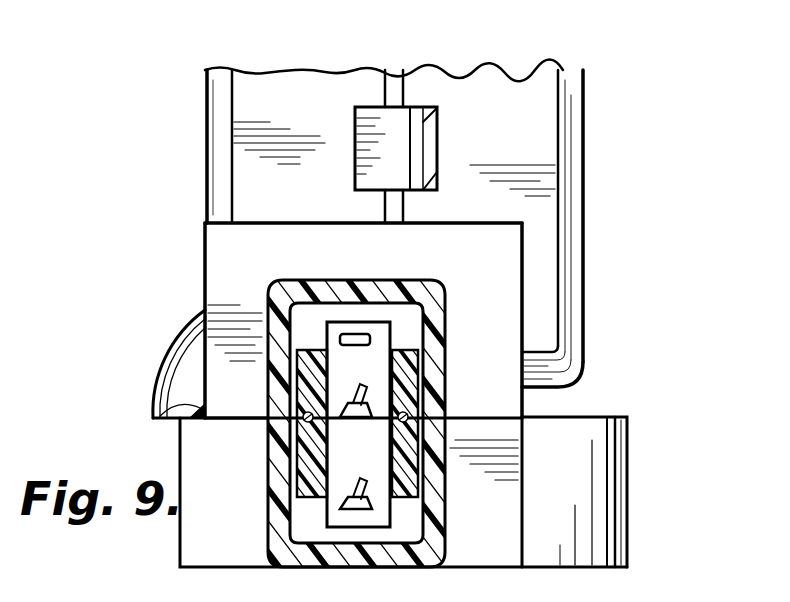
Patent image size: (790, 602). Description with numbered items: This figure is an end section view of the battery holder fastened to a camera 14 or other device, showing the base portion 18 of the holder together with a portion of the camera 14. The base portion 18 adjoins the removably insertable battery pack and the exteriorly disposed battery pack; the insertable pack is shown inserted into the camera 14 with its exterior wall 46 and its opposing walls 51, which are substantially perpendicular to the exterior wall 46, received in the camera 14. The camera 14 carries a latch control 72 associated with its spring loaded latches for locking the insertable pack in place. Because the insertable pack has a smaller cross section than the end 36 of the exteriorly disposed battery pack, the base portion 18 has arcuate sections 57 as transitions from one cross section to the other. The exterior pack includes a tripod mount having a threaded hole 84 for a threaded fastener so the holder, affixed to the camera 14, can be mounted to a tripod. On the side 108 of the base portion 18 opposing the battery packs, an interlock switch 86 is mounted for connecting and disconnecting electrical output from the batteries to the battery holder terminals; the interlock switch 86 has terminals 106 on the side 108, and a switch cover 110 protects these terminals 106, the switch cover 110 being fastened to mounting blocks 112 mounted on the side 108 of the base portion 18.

The camera 14 is at (585, 180).
The latch control 72 is at (418, 120).
The exterior wall 46 is at (267, 223).
The side 108 is at (253, 258).
The opposing walls 51 is at (522, 282).
The switch cover 110 is at (372, 341).
The terminals 106 is at (417, 495).
The mounting blocks 112 is at (320, 350).
The interlock switch 86 is at (313, 428).
The base portion 18 is at (203, 385).
The arcuate sections 57 is at (196, 400).
The end 36 is at (210, 452).
The threaded hole 84 is at (592, 517).